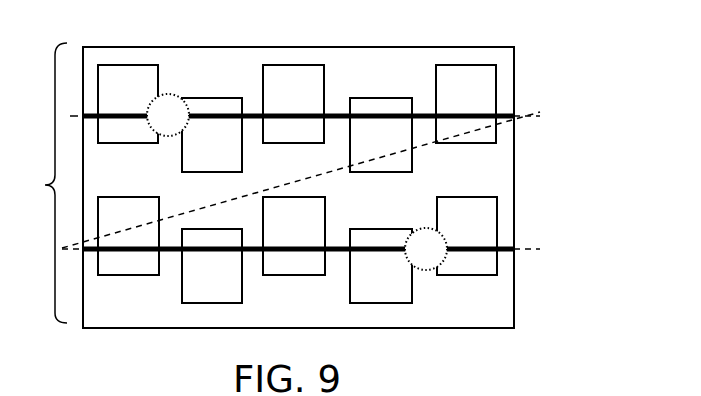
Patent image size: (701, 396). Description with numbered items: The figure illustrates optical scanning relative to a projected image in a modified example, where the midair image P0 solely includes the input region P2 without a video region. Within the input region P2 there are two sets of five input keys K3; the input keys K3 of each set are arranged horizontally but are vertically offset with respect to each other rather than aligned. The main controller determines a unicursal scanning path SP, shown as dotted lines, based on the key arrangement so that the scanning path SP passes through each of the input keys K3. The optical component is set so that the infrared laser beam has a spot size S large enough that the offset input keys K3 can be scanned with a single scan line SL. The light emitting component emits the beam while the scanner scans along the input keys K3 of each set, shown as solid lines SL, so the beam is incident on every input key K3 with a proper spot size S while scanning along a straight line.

The input keys K3 is at (117, 65).
The spot size S is at (165, 94).
The scanning path SP is at (522, 115).
The midair image P0 is at (514, 165).
The scan line SL is at (507, 252).
The input region P2 is at (39, 183).